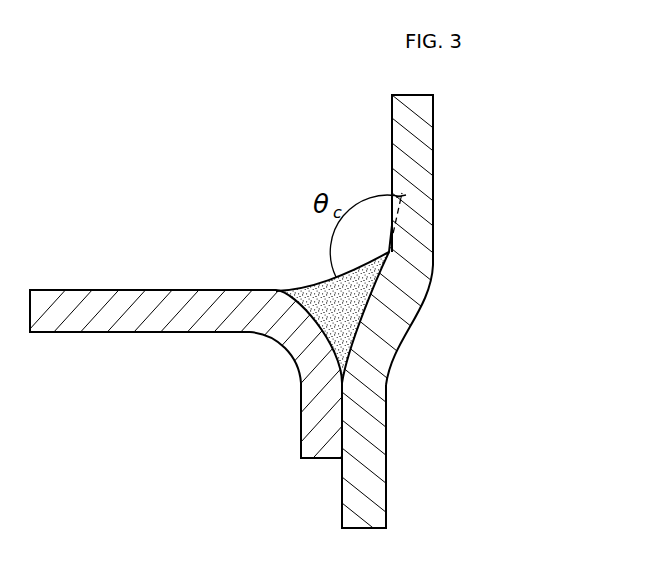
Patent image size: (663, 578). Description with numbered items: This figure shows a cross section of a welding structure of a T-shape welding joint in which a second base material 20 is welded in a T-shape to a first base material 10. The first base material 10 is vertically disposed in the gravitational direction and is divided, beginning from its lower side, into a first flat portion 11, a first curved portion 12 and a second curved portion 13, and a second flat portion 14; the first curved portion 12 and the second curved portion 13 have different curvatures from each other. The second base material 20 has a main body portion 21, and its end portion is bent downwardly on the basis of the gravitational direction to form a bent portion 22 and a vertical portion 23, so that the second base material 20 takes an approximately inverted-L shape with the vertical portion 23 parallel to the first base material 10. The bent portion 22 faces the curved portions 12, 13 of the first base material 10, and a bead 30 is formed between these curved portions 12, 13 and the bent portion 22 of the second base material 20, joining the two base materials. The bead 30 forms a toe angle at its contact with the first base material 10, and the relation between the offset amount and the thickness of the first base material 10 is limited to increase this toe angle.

The first base material 10 is at (474, 313).
The first flat portion 11 is at (428, 455).
The first curved portion 12 is at (393, 353).
The second curved portion 13 is at (428, 272).
The second flat portion 14 is at (426, 195).
The second base material 20 is at (270, 387).
The main body portion 21 is at (87, 320).
The bent portion 22 is at (292, 343).
The vertical portion 23 is at (302, 418).
The bead 30 is at (313, 290).